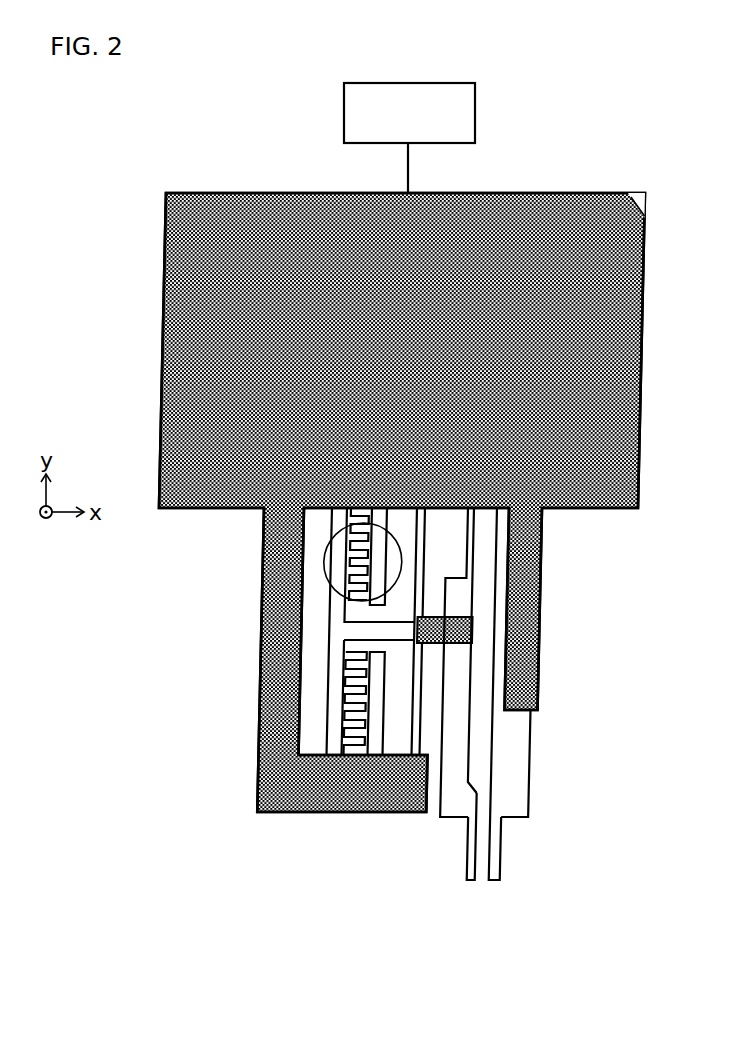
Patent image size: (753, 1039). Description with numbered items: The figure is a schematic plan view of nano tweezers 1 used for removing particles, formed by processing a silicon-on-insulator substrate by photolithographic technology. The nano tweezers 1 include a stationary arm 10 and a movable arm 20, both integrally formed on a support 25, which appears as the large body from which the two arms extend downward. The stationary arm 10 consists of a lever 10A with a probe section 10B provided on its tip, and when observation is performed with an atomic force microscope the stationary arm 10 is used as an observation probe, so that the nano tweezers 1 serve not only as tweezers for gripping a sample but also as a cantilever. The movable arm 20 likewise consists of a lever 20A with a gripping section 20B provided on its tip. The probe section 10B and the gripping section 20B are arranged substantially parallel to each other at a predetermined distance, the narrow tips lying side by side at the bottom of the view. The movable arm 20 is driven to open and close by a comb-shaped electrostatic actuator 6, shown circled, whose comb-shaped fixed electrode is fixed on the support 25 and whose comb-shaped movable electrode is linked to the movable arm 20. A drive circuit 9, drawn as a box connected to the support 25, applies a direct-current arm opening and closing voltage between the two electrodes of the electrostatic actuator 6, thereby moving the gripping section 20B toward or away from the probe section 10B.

The nano tweezers 1 is at (163, 275).
The electrostatic actuator 6 is at (322, 562).
The drive circuit 9 is at (475, 113).
The stationary arm 10 is at (570, 695).
The lever 10A is at (517, 798).
The probe section 10B is at (501, 848).
The movable arm 20 is at (394, 708).
The lever 20A is at (455, 802).
The gripping section 20B is at (467, 847).
The support 25 is at (197, 373).